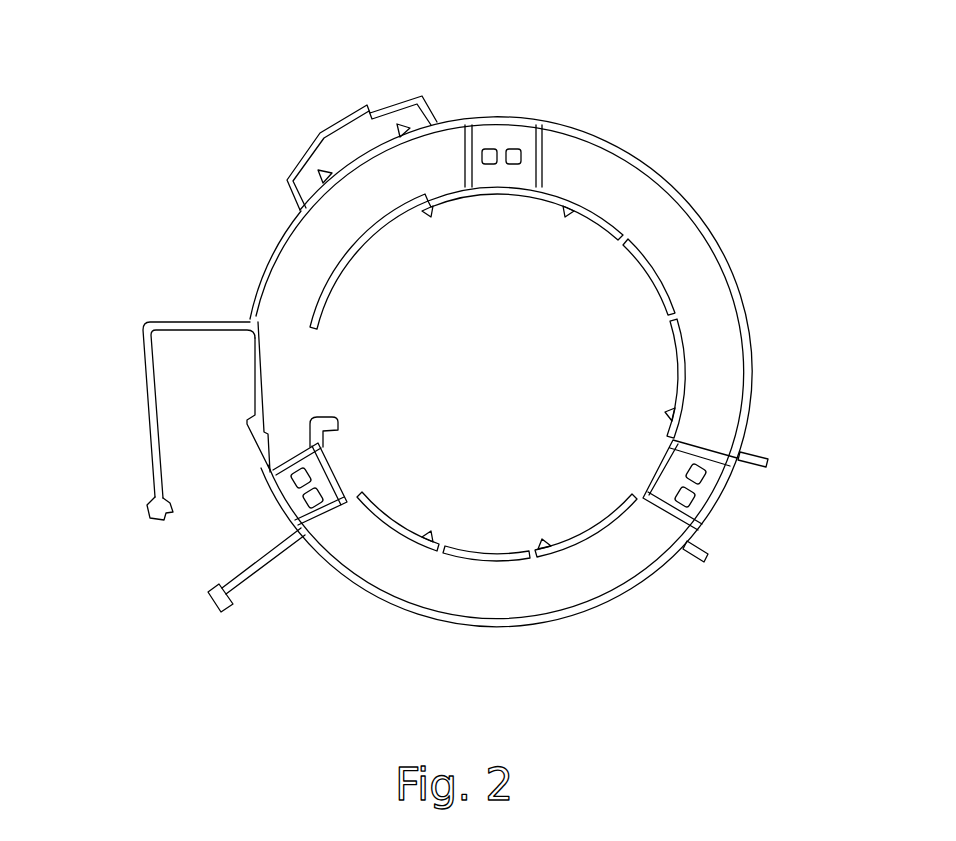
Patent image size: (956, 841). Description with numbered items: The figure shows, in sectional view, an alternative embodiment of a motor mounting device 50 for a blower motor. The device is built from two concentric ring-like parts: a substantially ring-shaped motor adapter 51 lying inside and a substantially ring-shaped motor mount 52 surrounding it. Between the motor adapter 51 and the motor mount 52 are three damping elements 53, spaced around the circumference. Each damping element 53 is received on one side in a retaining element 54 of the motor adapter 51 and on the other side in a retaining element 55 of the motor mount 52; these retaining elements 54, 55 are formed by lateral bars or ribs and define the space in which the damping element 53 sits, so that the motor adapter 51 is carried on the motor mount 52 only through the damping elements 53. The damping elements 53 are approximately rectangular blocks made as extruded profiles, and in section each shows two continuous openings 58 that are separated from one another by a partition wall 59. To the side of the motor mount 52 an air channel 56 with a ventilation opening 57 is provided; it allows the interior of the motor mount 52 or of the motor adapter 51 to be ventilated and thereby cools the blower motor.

The motor mounting device 50 is at (668, 92).
The motor adapter 51 is at (633, 245).
The motor mount 52 is at (731, 270).
The damping element 53 is at (486, 137).
The retaining element of motor adapter 54 is at (324, 440).
The retaining element of motor mount 55 is at (297, 543).
The air channel 56 is at (197, 378).
The ventilation opening 57 is at (180, 522).
The continuous opening 58 is at (514, 150).
The partition wall 59 is at (500, 165).